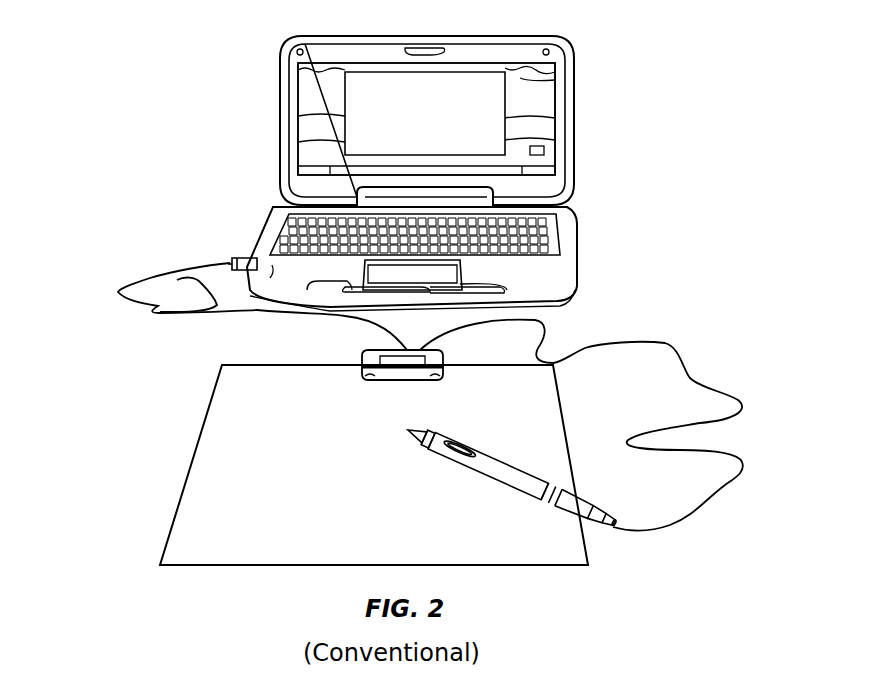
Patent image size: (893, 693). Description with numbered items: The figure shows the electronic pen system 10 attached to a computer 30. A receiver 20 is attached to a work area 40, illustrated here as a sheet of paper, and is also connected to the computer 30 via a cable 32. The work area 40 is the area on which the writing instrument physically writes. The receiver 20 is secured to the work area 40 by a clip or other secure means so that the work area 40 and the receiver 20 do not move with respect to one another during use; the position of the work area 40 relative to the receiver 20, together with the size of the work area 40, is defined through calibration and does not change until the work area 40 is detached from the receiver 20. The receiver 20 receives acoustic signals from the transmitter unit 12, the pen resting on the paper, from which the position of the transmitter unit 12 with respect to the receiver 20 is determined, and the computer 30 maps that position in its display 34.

The electronic pen system 10 is at (172, 377).
The transmitter unit 12 is at (503, 492).
The receiver 20 is at (363, 356).
The computer 30 is at (280, 98).
The cable 32 is at (153, 276).
The display 34 is at (543, 70).
The work area 40 is at (183, 489).